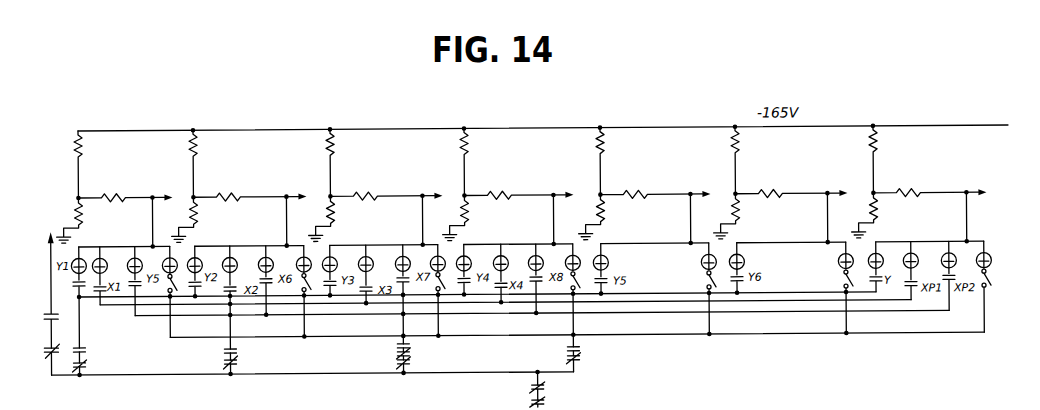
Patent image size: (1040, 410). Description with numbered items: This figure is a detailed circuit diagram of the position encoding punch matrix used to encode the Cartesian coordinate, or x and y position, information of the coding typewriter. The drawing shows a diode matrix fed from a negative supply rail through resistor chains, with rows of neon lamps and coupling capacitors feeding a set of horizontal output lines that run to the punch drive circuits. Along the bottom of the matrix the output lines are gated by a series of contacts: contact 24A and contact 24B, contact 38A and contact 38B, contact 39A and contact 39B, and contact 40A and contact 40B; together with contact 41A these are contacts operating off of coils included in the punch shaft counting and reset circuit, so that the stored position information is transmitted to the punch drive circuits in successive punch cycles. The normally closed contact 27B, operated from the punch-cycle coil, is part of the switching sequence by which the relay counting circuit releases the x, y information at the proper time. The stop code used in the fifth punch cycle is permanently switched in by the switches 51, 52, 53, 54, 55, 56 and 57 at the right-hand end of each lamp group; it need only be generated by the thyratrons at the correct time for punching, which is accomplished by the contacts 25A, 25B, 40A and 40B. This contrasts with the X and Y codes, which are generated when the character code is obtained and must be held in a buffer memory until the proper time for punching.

The variable capacitor 24A is at (53, 350).
The contact 24B is at (85, 351).
The contact 25A is at (408, 358).
The contact 25B is at (578, 362).
The normally closed contact 27B is at (541, 394).
The contact 38A is at (85, 368).
The contact 38B is at (235, 355).
The contact 39A is at (235, 369).
The capacitor 39B is at (401, 346).
The contact 40A is at (398, 368).
The contact 40B is at (574, 350).
The variable capacitor 41A is at (541, 409).
The switch 51 is at (162, 286).
The switch 52 is at (295, 285).
The switch 53 is at (432, 284).
The switch 54 is at (565, 284).
The switch 55 is at (702, 282).
The switch 56 is at (835, 281).
The switch 57 is at (1000, 280).